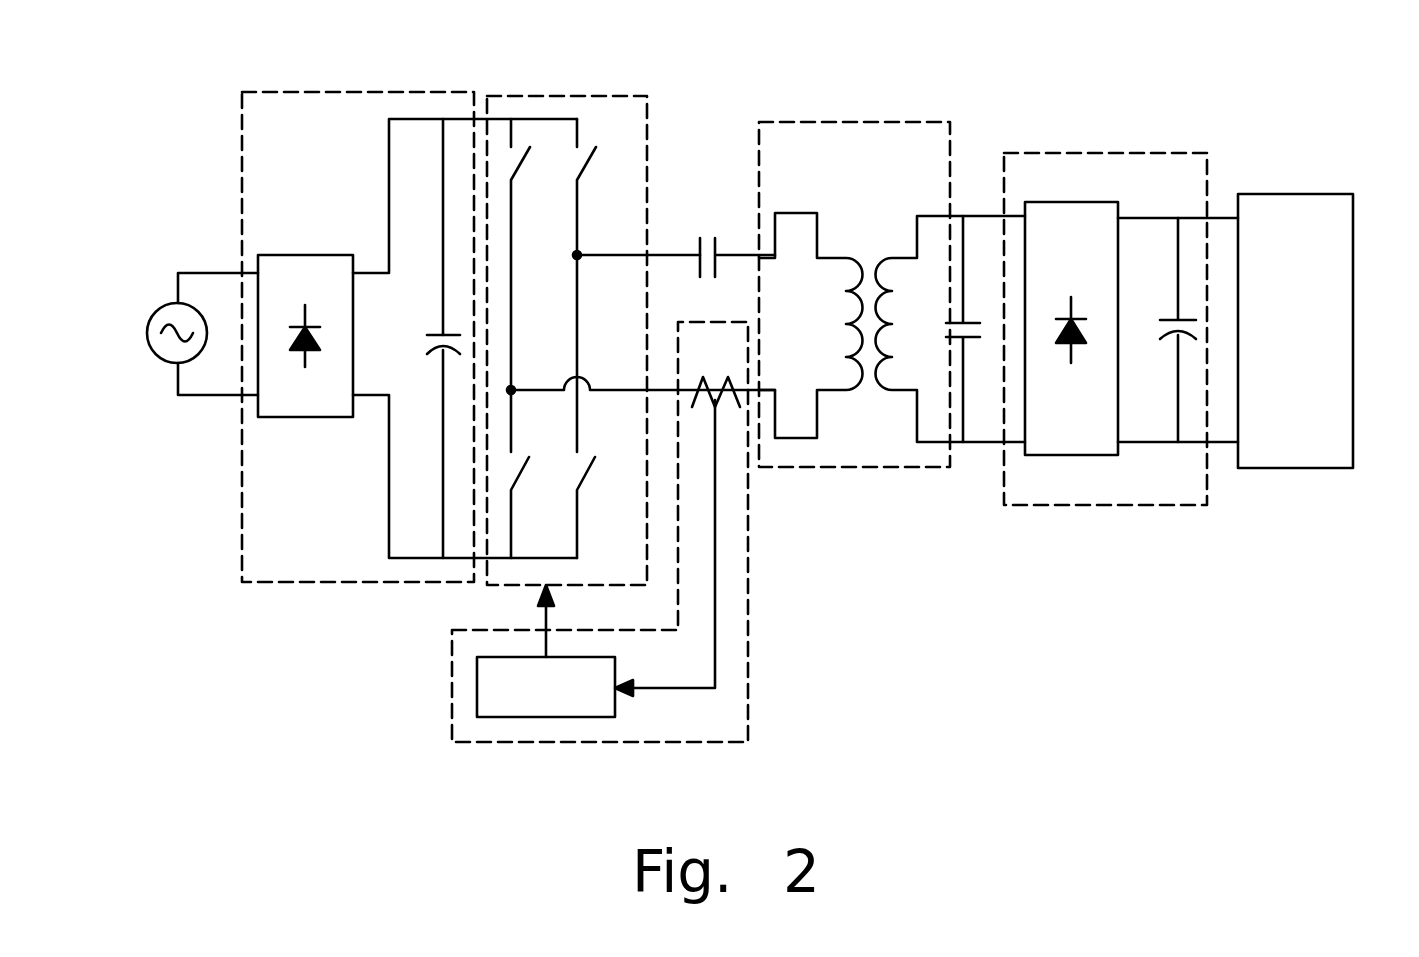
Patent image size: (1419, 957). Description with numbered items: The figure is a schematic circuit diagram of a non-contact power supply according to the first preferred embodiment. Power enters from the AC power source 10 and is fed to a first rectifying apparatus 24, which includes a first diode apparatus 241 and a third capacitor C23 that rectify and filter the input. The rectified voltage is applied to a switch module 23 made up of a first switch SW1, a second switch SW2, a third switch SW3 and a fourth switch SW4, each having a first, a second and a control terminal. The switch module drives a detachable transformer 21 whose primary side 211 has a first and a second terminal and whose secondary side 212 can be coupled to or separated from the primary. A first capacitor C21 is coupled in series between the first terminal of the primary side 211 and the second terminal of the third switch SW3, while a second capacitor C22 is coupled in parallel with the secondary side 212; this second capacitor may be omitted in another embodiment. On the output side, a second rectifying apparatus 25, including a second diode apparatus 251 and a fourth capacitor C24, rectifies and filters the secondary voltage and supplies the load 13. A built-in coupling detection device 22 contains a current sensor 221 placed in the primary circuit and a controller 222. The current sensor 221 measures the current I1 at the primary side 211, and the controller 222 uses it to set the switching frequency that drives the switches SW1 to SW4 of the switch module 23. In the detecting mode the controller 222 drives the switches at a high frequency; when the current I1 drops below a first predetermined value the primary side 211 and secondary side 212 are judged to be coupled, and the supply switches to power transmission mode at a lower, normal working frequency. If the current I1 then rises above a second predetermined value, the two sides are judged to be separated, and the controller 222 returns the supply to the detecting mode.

The AC power source 10 is at (158, 310).
The load 13 is at (1282, 194).
The detachable transformer 21 is at (892, 258).
The primary side 211 is at (832, 257).
The secondary side 212 is at (897, 257).
The built-in coupling detection device 22 is at (603, 532).
The current sensor 221 is at (717, 517).
The controller 222 is at (477, 688).
The switch module 23 is at (631, 303).
The first rectifying apparatus 24 is at (409, 301).
The first diode apparatus 241 is at (280, 255).
The second rectifying apparatus 25 is at (1121, 299).
The second diode apparatus 251 is at (1093, 202).
The first capacitor C21 is at (731, 237).
The second capacitor C22 is at (979, 329).
The third capacitor C23 is at (423, 338).
The fourth capacitor C24 is at (1161, 330).
The first switch SW1 is at (539, 254).
The second switch SW2 is at (539, 474).
The third switch SW3 is at (605, 285).
The fourth switch SW4 is at (604, 507).
The current at the primary side I1 is at (717, 359).